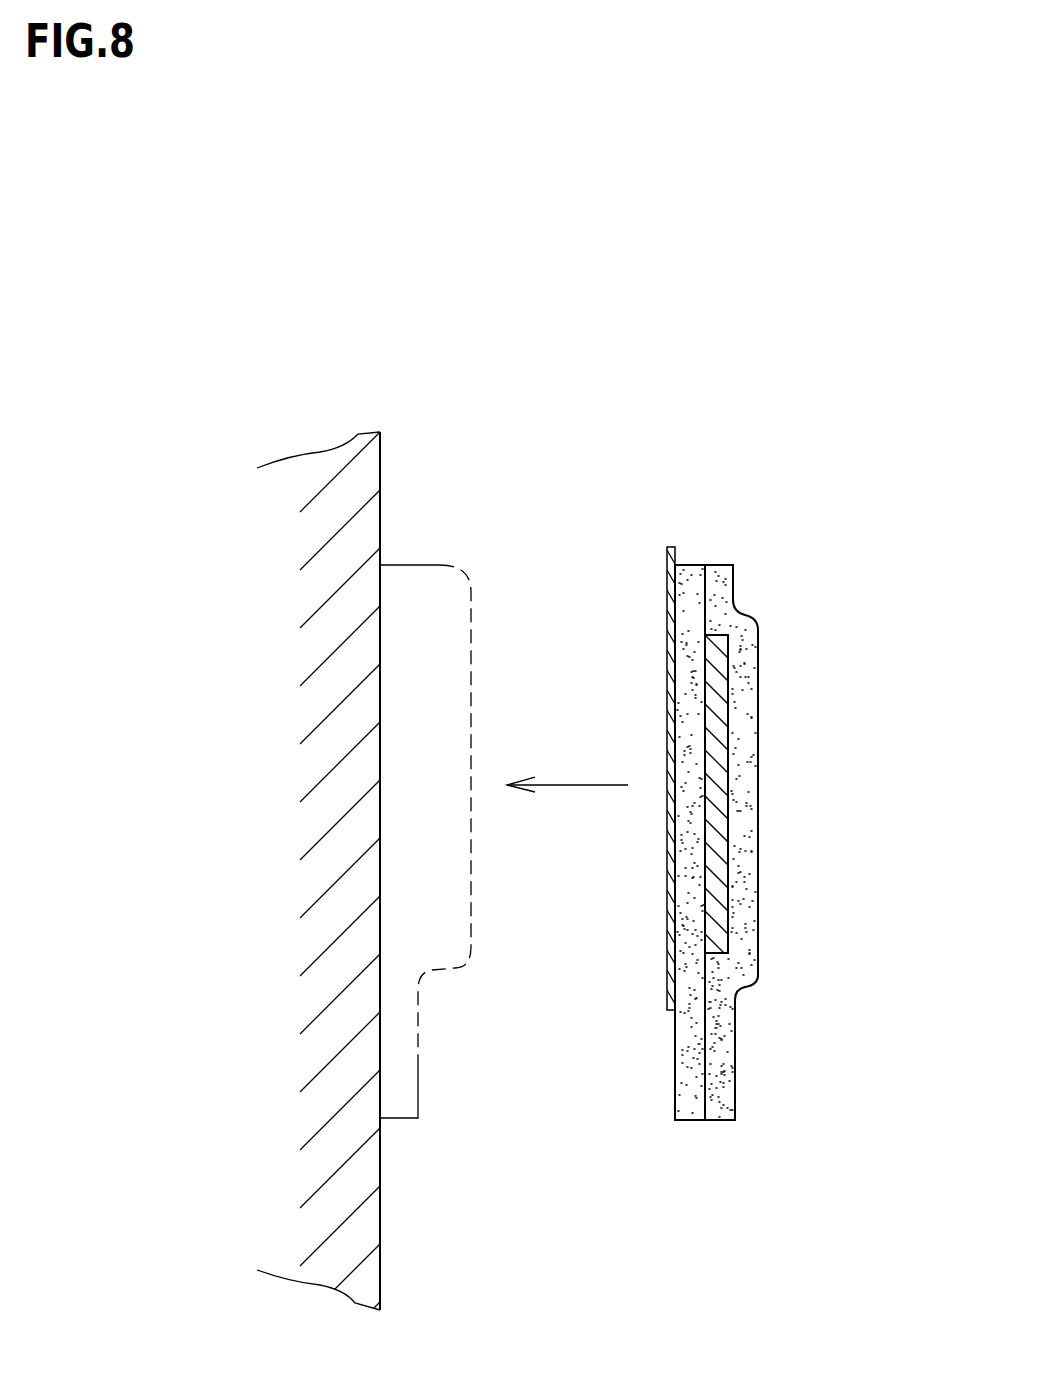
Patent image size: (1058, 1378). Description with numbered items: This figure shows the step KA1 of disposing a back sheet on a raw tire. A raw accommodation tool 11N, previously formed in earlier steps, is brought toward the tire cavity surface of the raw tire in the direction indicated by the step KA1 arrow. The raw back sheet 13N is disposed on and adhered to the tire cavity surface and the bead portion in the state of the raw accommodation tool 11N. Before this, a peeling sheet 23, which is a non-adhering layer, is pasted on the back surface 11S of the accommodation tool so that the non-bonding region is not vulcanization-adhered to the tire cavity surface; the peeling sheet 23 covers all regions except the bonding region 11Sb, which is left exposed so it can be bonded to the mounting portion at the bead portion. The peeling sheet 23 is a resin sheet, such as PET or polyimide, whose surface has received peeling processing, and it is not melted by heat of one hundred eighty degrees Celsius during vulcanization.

The raw accommodation tool 11N is at (692, 785).
The back surface 11S is at (670, 578).
The bonding region 11Sb is at (687, 1060).
The raw back sheet 13N is at (690, 592).
The peeling sheet 23 is at (677, 551).
The step of disposing raw back sheet KA1 is at (580, 785).